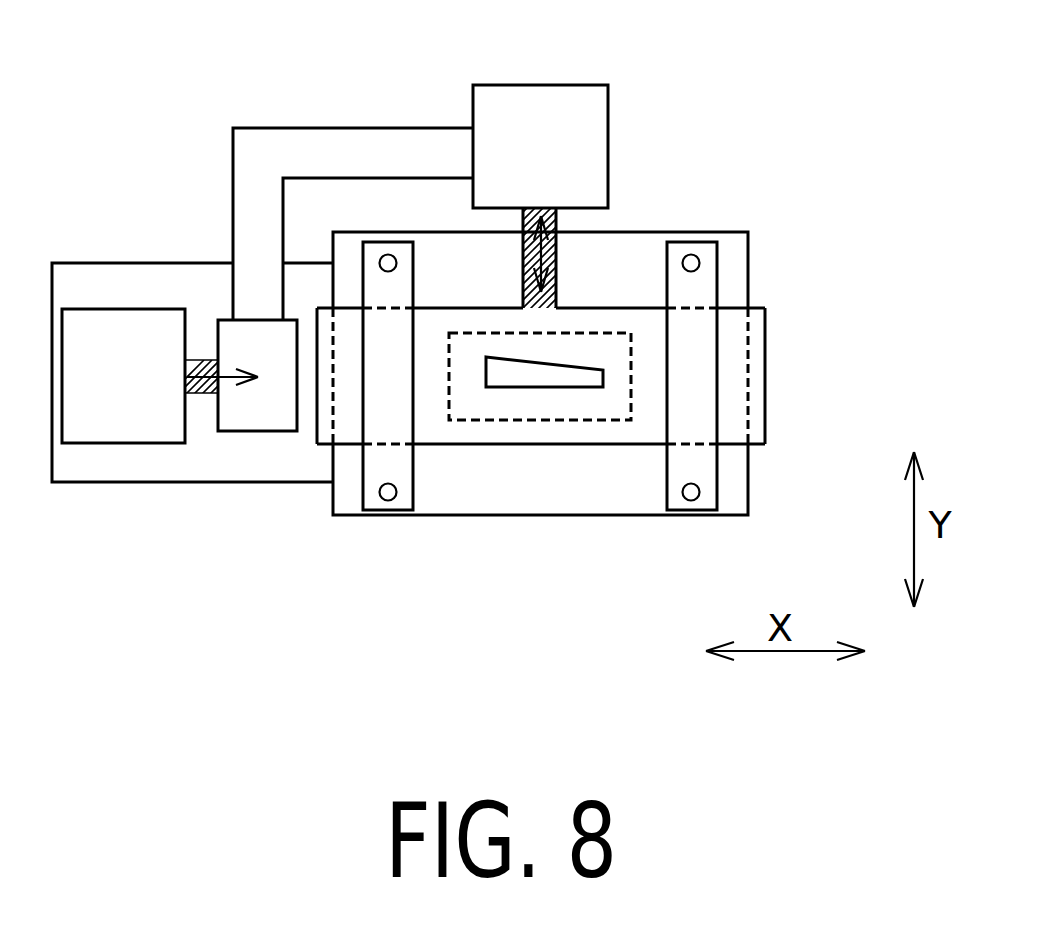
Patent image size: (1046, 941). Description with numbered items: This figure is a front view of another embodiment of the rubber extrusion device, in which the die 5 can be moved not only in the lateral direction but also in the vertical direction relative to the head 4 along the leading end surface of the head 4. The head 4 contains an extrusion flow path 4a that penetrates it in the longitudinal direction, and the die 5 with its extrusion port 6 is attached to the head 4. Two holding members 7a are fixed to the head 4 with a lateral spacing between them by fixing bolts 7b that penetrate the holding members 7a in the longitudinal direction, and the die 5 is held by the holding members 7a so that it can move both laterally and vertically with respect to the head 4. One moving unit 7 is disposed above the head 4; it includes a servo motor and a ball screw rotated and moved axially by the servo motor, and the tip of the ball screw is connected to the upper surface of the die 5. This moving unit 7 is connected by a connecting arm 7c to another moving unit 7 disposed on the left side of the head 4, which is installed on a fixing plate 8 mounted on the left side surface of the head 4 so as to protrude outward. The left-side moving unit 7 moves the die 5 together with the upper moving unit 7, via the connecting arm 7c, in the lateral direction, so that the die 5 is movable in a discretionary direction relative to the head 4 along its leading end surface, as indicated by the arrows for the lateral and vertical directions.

The moving unit 7 is at (112, 297).
The holding member 7a is at (403, 423).
The fixing bolt 7b is at (700, 263).
The connecting arm 7c is at (342, 140).
The fixing plate 8 is at (173, 275).
The head 4 is at (700, 232).
The extrusion flow path 4a is at (578, 421).
The die 5 is at (605, 313).
The extrusion port 6 is at (513, 386).